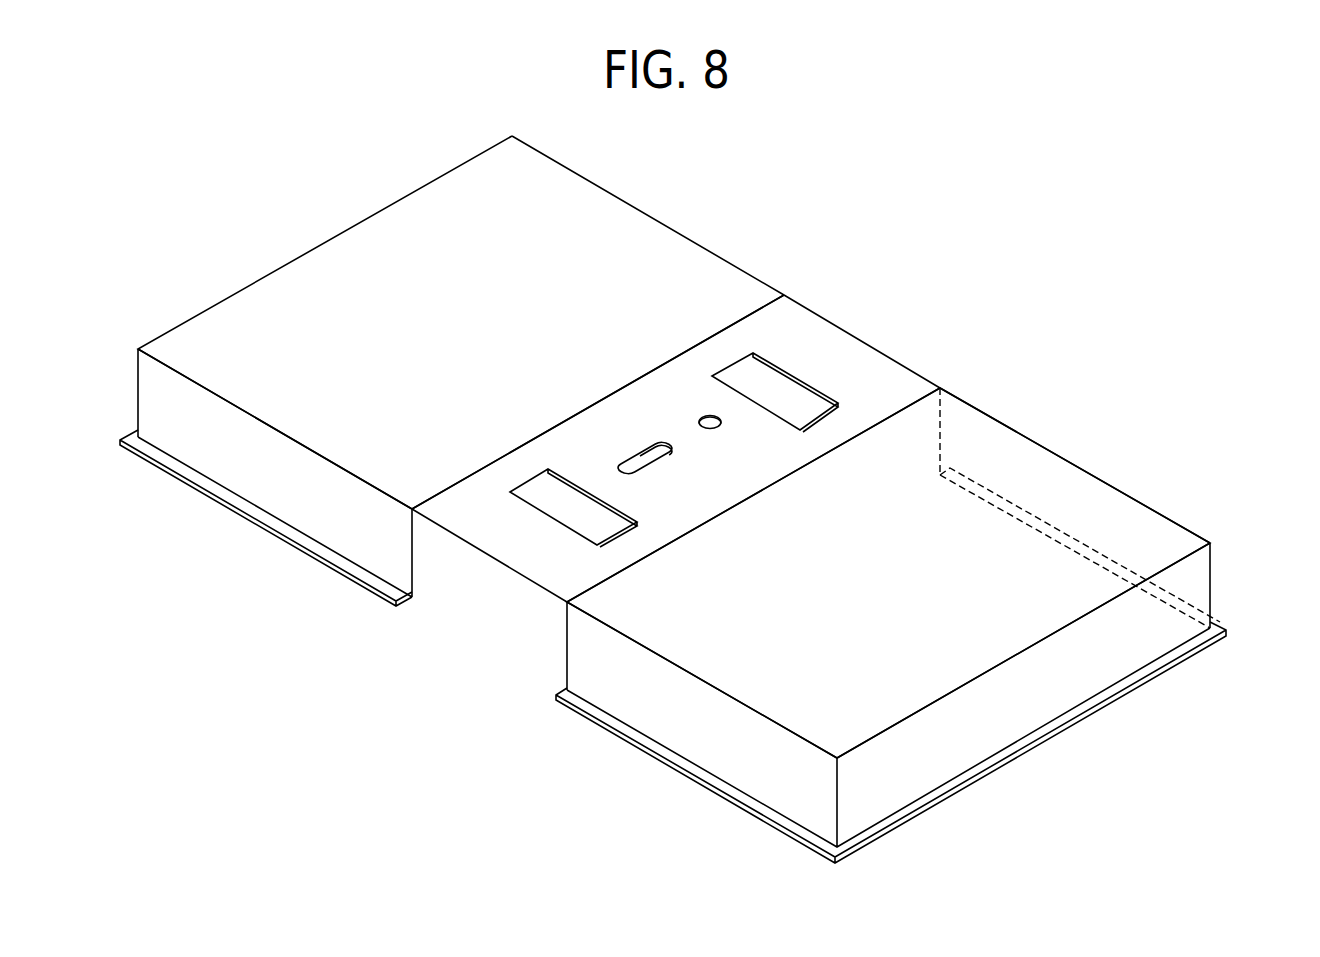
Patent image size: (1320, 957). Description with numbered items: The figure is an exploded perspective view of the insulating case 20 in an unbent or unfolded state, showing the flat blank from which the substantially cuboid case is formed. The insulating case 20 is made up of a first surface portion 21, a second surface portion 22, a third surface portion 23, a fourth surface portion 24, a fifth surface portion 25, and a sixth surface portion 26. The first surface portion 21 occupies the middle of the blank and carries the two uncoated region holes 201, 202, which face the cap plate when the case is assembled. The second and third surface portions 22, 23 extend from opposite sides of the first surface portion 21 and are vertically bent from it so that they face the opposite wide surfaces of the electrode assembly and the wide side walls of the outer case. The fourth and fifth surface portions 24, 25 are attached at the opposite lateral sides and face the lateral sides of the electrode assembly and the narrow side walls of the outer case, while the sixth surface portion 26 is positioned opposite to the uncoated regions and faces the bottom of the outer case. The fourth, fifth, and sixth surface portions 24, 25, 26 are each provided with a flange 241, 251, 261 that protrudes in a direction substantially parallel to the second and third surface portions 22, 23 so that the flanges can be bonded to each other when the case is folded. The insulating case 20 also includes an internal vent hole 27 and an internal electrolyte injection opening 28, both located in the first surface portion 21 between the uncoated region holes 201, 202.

The insulating case 20 is at (789, 196).
The first surface portion 21 is at (820, 333).
The second surface portion 22 is at (594, 205).
The third surface portion 23 is at (1027, 457).
The fourth surface portion 24 is at (302, 497).
The flange 241 is at (222, 493).
The fifth surface portion 25 is at (1142, 503).
The flange 251 is at (1173, 598).
The sixth surface portion 26 is at (1055, 688).
The flange 261 is at (953, 785).
The uncoated region hole 201 is at (535, 483).
The uncoated region hole 202 is at (737, 358).
The internal vent hole 27 is at (638, 455).
The internal electrolyte injection opening 28 is at (707, 418).